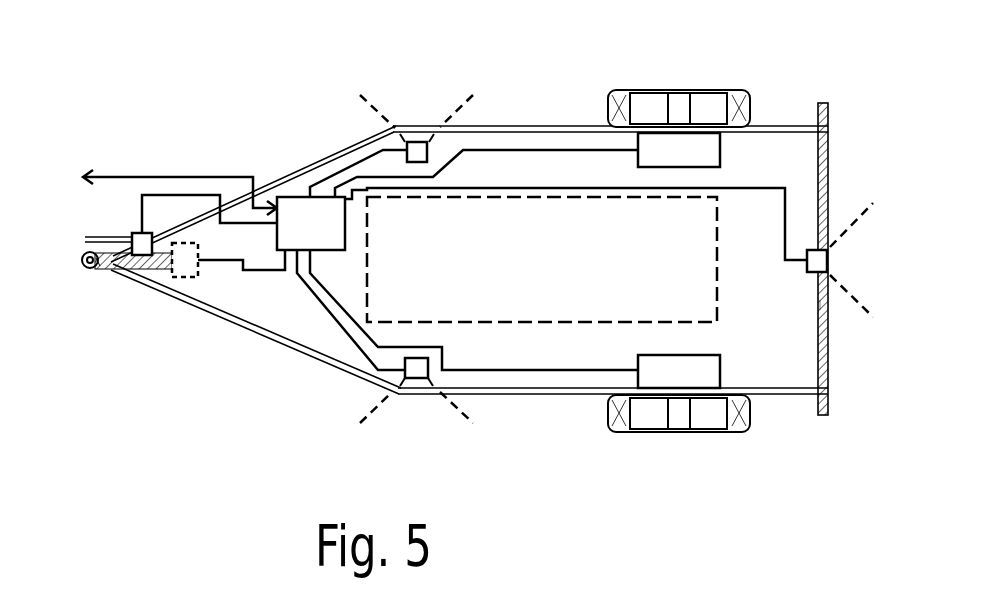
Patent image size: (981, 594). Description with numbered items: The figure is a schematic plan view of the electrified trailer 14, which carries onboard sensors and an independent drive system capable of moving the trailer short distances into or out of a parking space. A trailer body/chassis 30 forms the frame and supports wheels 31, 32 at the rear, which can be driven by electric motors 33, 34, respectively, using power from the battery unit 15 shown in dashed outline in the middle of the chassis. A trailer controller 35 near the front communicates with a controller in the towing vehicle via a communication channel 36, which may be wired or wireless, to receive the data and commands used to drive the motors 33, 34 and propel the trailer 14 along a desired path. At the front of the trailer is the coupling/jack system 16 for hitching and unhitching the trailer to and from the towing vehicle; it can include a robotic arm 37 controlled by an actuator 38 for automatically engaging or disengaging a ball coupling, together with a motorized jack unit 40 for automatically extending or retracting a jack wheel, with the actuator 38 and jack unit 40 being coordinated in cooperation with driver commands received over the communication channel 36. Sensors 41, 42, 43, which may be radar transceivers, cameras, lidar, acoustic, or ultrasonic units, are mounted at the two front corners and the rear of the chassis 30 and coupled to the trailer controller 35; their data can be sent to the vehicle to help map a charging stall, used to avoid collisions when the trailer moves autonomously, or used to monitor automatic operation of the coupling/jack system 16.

The trailer 14 is at (184, 418).
The battery unit 15 is at (548, 197).
The coupling/jack system 16 is at (106, 286).
The trailer body/chassis 30 is at (553, 395).
The wheel 31 is at (705, 433).
The wheel 32 is at (705, 90).
The electric motor 33 is at (720, 362).
The electric motor 34 is at (720, 150).
The trailer controller 35 is at (337, 250).
The communication channel 36 is at (195, 176).
The robotic arm 37 is at (88, 247).
The actuator 38 is at (133, 235).
The motorized jack unit 40 is at (188, 277).
The sensor 41 is at (427, 157).
The sensor 42 is at (405, 375).
The sensor 43 is at (810, 272).